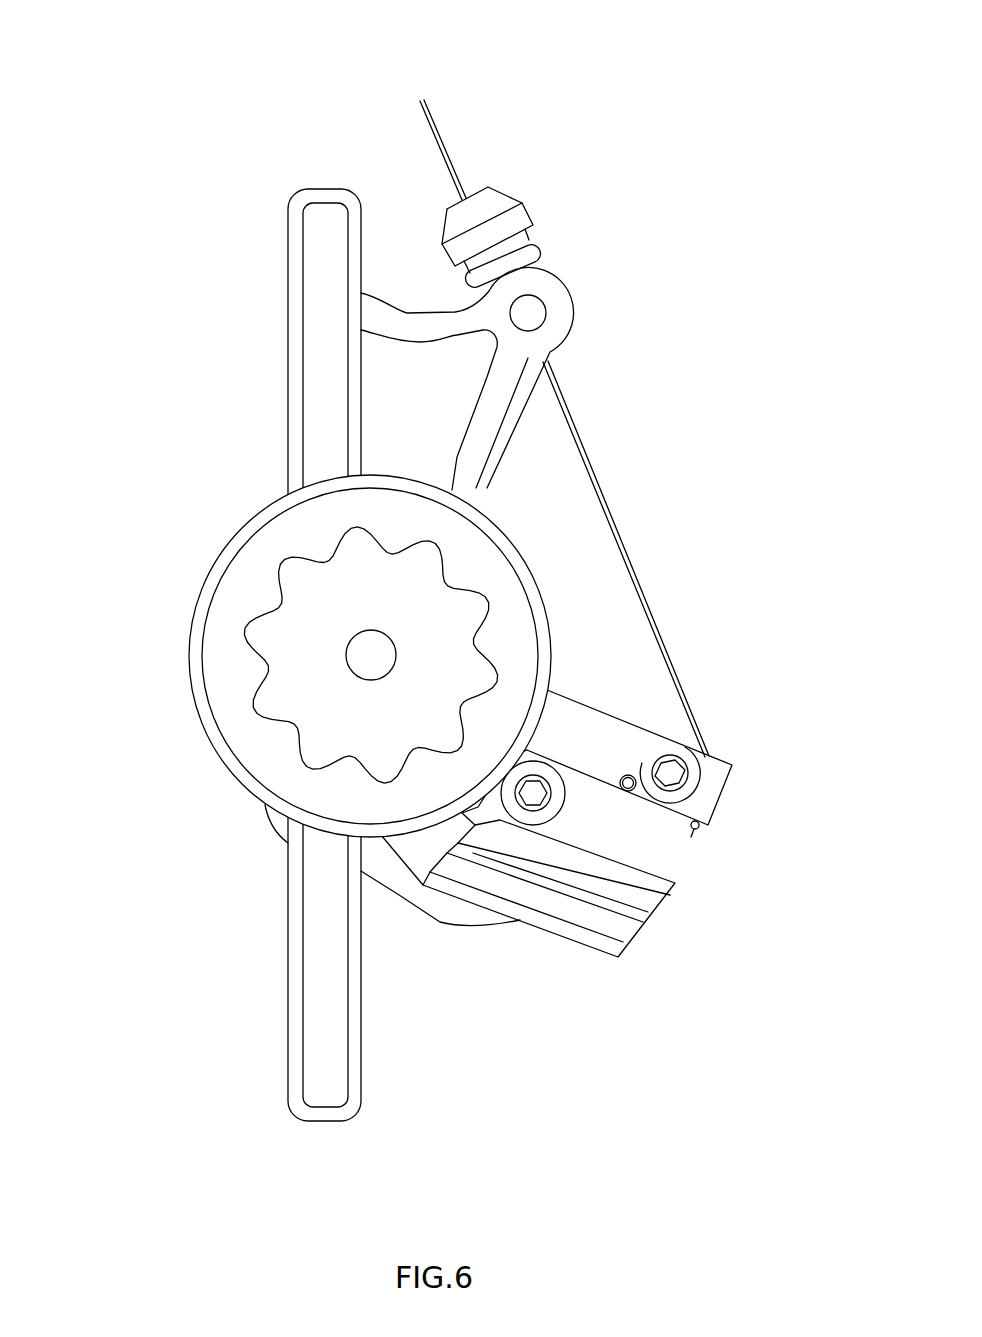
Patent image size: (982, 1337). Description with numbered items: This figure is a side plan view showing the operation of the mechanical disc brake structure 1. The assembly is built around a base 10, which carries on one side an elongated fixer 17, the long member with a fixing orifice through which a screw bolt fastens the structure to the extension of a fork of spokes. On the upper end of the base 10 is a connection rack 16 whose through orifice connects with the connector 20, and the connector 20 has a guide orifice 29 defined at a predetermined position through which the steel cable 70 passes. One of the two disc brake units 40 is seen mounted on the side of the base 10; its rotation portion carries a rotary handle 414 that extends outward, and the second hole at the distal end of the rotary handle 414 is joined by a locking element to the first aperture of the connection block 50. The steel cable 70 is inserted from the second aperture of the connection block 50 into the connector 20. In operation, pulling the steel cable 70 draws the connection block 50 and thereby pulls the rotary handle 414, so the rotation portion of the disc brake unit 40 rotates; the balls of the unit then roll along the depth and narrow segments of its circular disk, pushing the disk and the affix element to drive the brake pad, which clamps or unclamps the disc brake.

The mechanical disc brake structure 1 is at (786, 217).
The base 10 is at (291, 543).
The connection rack 16 is at (487, 397).
The elongated fixer 17 is at (322, 326).
The connector 20 is at (607, 242).
The guide orifice 29 is at (480, 188).
The disc brake unit 40 is at (222, 627).
The connection block 50 is at (712, 757).
The steel cable 70 is at (640, 582).
The rotary handle 414 is at (598, 728).